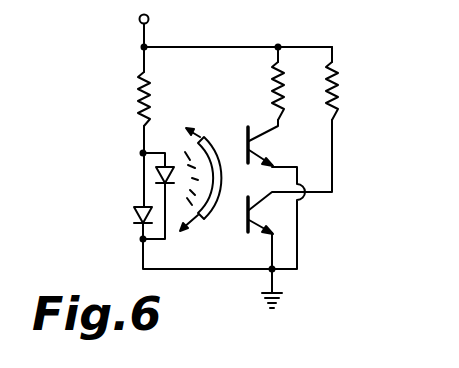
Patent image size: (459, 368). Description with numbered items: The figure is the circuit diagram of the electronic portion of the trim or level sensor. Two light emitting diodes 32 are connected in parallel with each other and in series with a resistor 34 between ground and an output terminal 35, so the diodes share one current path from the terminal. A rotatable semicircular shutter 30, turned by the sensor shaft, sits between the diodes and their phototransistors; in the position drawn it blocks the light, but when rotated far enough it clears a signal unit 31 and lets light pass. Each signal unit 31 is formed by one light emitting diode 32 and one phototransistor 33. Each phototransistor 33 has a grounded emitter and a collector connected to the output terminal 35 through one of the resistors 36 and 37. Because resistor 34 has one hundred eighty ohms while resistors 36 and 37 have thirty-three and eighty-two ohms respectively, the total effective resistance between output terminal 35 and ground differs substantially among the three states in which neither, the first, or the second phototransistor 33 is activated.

The shutter 30 is at (207, 218).
The signal unit 31 is at (115, 61).
The light emitting diode 32 is at (160, 175).
The phototransistor 33 is at (262, 195).
The resistor 34 is at (140, 114).
The output terminal 35 is at (149, 19).
The resistor 36 is at (275, 92).
The resistor 37 is at (336, 98).